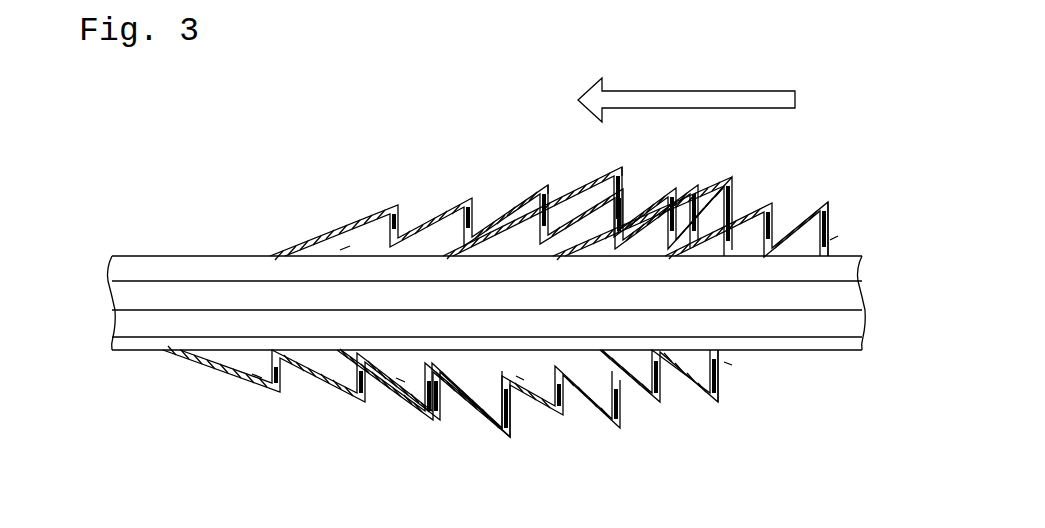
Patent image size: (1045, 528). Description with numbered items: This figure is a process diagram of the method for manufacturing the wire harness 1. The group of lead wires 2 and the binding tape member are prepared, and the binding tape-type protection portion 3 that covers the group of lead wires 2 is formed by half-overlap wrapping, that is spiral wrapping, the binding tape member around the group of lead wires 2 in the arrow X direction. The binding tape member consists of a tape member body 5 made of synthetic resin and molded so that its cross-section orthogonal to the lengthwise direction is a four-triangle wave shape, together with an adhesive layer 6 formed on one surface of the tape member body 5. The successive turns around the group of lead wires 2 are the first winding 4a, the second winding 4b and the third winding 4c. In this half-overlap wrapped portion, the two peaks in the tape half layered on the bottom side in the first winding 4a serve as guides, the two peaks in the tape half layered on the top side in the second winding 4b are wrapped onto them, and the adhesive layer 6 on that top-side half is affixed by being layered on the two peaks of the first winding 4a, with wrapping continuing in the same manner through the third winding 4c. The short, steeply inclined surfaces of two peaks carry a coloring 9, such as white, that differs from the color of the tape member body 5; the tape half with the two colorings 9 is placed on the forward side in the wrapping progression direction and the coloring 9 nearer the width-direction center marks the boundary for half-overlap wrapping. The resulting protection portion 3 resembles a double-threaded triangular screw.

The wire harness 1 is at (365, 118).
The group of lead wires 2 is at (178, 262).
The binding tape-type protection portion 3 is at (515, 315).
The first winding 4a is at (808, 215).
The second winding 4b is at (712, 185).
The third winding 4c is at (500, 205).
The tape member body 5 is at (832, 215).
The adhesive layer 6 is at (346, 245).
The coloring 9 is at (550, 200).
The arrow X direction X is at (687, 90).